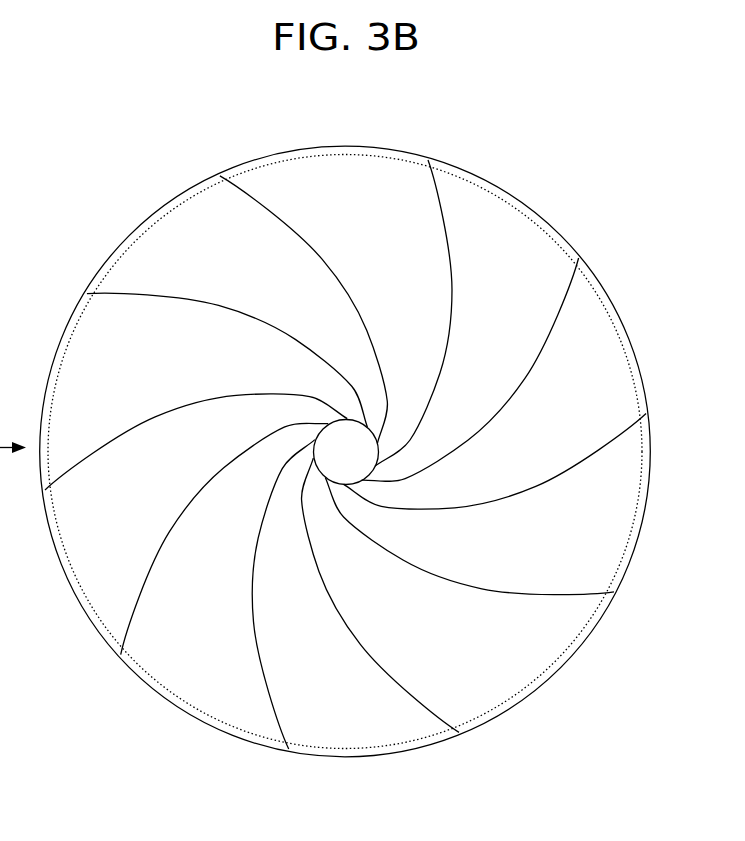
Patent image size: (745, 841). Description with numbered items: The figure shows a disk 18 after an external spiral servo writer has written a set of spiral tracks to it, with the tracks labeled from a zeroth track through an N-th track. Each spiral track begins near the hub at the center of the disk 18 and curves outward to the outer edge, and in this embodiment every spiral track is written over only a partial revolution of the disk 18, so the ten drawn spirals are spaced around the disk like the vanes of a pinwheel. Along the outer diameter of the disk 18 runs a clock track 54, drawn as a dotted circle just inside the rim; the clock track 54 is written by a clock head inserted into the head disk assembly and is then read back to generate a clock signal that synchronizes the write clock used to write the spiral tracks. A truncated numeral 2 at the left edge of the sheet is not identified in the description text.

The disk 18 is at (545, 198).
The clock track 54 is at (632, 537).
The apparatus 2 is at (13, 301).